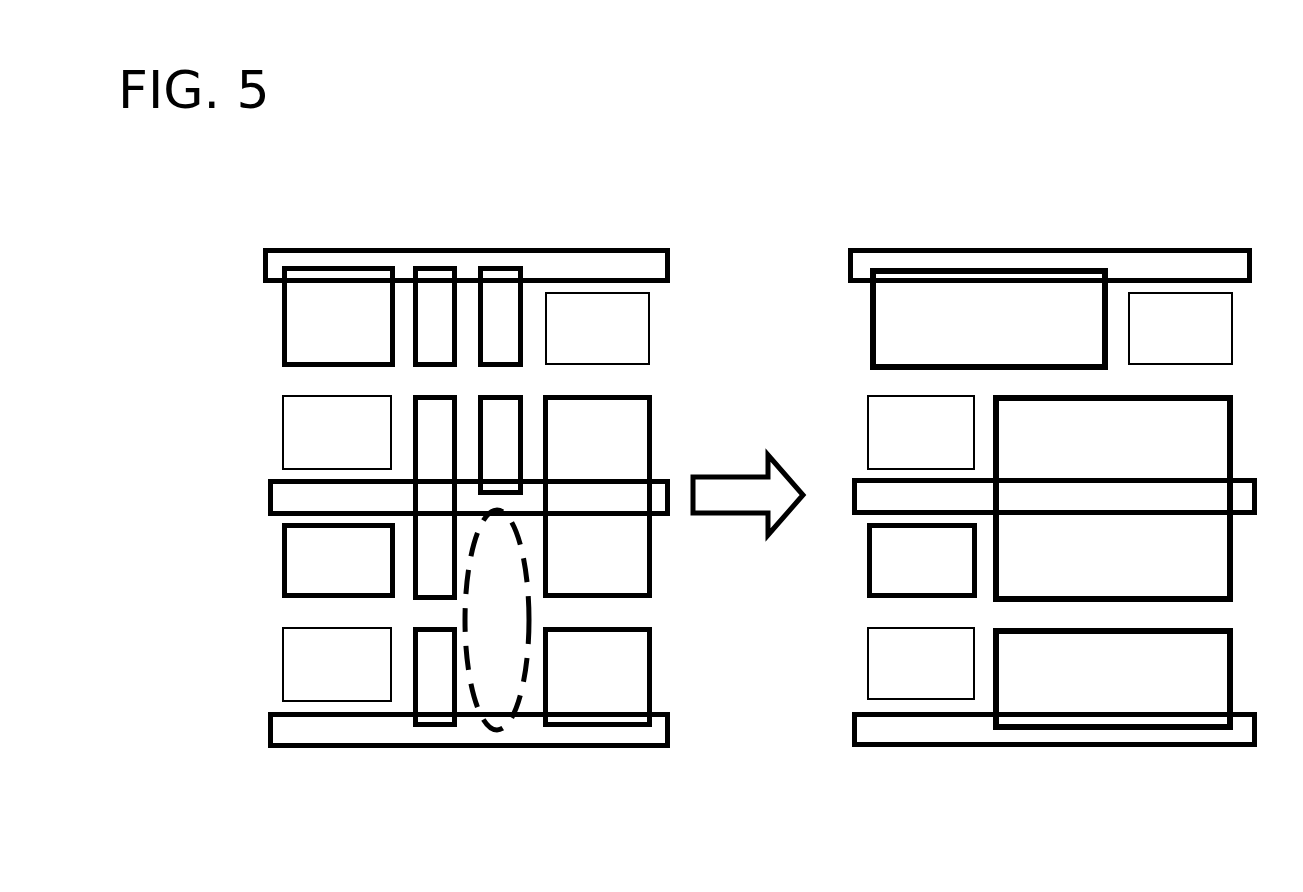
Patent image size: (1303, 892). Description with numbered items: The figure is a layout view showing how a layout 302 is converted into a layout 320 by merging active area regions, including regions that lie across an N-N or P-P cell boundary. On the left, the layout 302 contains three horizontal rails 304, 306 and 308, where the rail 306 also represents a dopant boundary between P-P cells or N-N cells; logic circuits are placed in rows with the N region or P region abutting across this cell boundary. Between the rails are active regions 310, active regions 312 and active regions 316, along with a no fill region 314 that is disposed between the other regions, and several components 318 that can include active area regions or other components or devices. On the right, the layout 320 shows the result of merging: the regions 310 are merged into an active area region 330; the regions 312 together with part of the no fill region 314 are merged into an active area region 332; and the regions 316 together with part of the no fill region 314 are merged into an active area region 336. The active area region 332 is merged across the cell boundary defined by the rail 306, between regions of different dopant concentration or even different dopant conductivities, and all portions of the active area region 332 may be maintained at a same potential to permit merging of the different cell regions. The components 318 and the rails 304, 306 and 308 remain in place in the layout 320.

The layout 302 is at (448, 176).
The rail 304 is at (277, 258).
The rail 306 is at (277, 497).
The rail 308 is at (282, 733).
The active regions 310 is at (502, 305).
The active regions 312 is at (447, 410).
The no fill region 314 is at (523, 677).
The active regions 316 is at (573, 687).
The components 318 is at (574, 342).
The layout 320 is at (1000, 203).
The active area region 330 is at (972, 334).
The active area region 332 is at (1092, 459).
The active area region 336 is at (1090, 682).